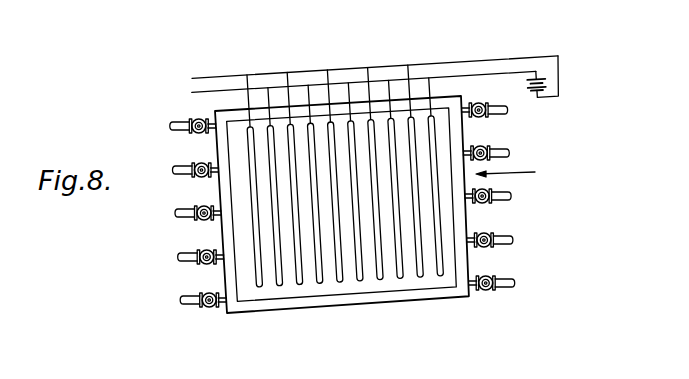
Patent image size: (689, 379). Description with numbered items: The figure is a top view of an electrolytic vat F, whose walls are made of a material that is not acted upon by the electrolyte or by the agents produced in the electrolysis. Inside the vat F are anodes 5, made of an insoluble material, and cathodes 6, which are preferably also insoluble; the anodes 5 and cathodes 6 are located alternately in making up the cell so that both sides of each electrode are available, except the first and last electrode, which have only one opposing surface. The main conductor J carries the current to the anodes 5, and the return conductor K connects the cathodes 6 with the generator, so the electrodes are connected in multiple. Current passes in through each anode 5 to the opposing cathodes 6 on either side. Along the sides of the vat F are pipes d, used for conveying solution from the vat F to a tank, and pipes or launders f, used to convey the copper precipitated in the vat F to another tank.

The anodes 5 is at (260, 287).
The cathodes 6 is at (280, 286).
The pipe d is at (176, 132).
The pipe or launder f is at (176, 176).
The return conductor K is at (507, 61).
The main conductor J is at (510, 76).
The electrolytic vat F is at (513, 173).